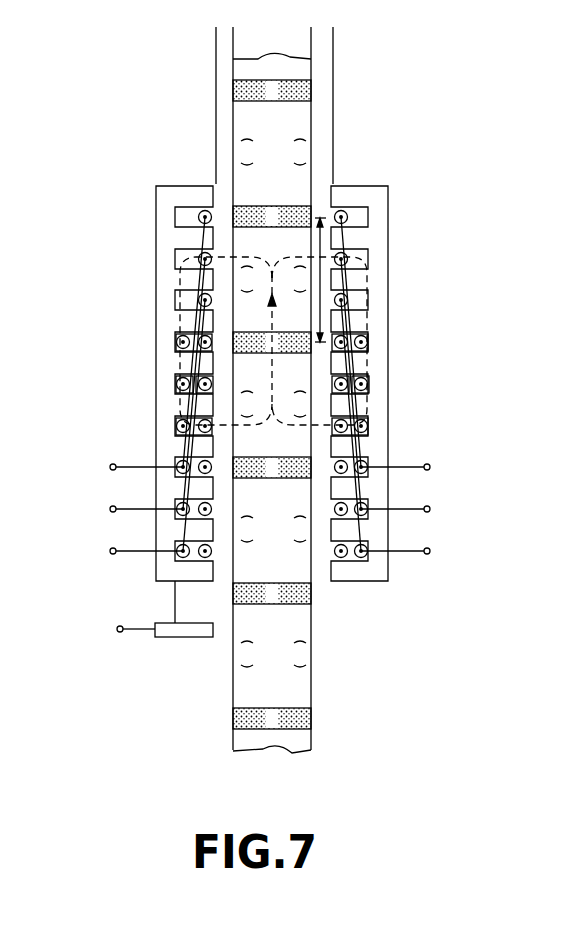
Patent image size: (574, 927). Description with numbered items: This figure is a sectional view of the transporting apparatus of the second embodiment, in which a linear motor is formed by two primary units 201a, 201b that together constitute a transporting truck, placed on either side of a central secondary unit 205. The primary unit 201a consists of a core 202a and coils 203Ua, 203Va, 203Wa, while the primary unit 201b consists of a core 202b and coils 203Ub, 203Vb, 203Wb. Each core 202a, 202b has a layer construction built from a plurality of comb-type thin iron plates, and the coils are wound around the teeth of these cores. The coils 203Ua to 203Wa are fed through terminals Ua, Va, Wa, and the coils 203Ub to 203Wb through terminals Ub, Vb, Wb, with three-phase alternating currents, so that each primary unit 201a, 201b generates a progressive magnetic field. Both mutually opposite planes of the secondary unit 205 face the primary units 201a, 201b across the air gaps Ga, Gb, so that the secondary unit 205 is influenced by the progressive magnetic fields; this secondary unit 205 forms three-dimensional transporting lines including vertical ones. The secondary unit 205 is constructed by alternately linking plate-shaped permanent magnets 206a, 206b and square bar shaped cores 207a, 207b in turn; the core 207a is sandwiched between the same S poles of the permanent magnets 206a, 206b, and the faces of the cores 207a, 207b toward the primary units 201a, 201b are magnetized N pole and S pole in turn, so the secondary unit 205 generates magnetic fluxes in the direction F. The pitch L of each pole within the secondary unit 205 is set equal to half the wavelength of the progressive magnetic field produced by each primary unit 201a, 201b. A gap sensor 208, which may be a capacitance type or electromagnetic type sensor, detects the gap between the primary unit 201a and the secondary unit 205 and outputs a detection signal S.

The primary unit 201a is at (129, 404).
The primary unit 201b is at (424, 404).
The core 202a is at (156, 291).
The core 202b is at (388, 300).
The coil 203Ua is at (190, 446).
The coil 203Va is at (186, 408).
The coil 203Wa is at (180, 365).
The coil 203Ub is at (345, 446).
The coil 203Vb is at (352, 403).
The coil 203Wb is at (357, 365).
The secondary unit 205 is at (291, 407).
The permanent magnet 206a is at (236, 723).
The permanent magnet 206b is at (233, 592).
The core 207a is at (243, 688).
The core 207b is at (311, 572).
The gap sensor 208 is at (163, 640).
The detection signal S is at (126, 630).
The U-phase terminal of first stator Ua is at (146, 574).
The V-phase terminal of first stator Va is at (131, 507).
The W-phase terminal of first stator Wa is at (130, 466).
The U-phase terminal of second stator Ub is at (408, 549).
The V-phase terminal of second stator Vb is at (407, 507).
The W-phase terminal of second stator Wb is at (410, 465).
The air gap between first stator and mover Ga is at (255, 31).
The air gap between second stator and mover Gb is at (355, 31).
The pitch of each pole L is at (320, 280).
The direction of magnetic fluxes F is at (367, 280).